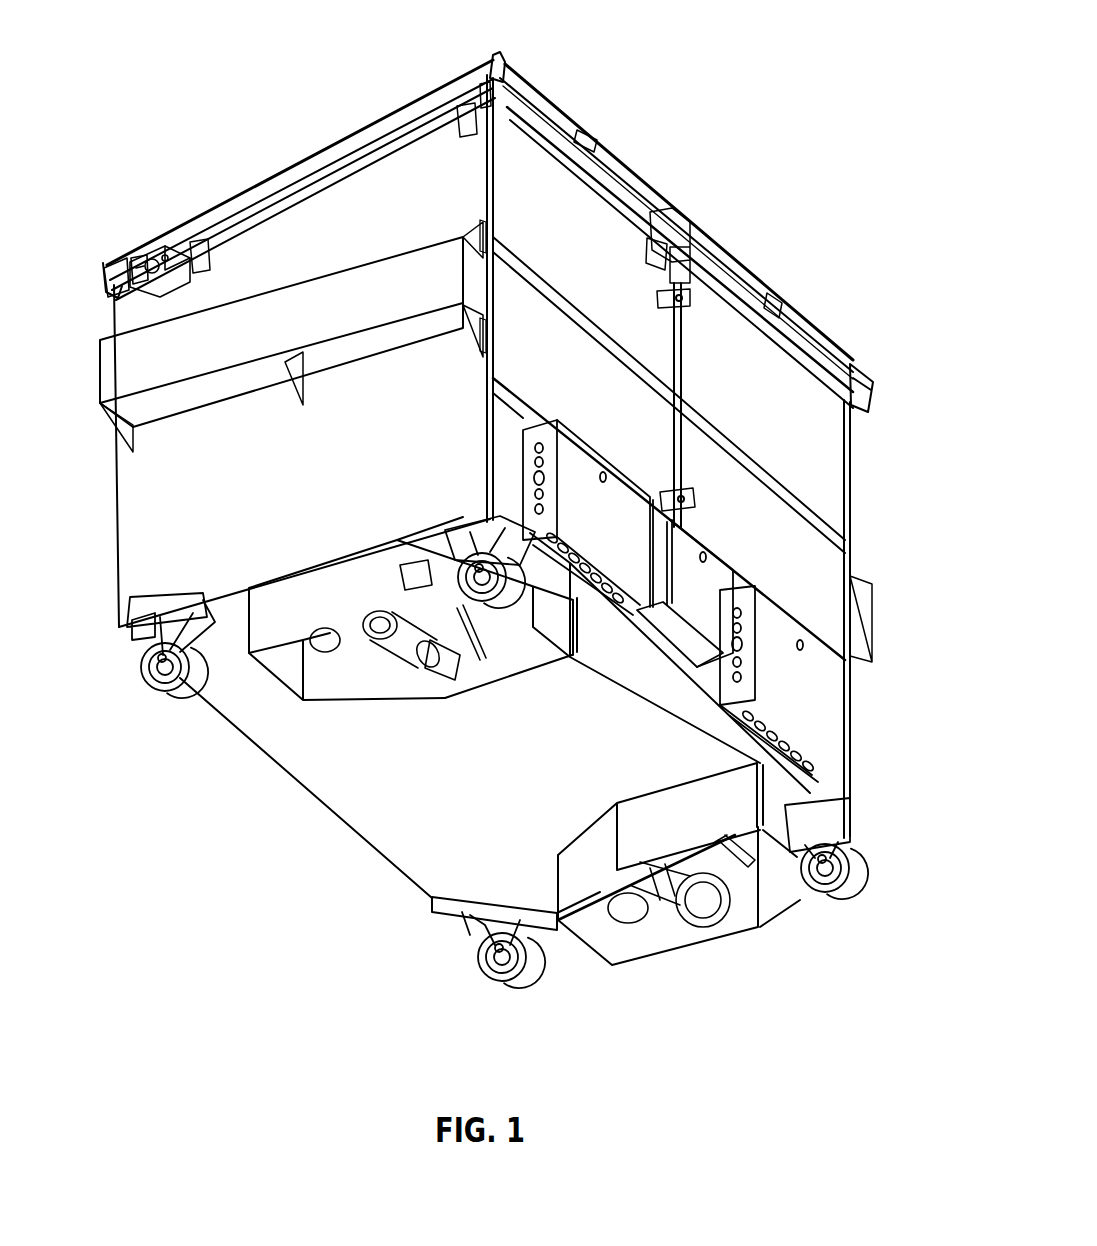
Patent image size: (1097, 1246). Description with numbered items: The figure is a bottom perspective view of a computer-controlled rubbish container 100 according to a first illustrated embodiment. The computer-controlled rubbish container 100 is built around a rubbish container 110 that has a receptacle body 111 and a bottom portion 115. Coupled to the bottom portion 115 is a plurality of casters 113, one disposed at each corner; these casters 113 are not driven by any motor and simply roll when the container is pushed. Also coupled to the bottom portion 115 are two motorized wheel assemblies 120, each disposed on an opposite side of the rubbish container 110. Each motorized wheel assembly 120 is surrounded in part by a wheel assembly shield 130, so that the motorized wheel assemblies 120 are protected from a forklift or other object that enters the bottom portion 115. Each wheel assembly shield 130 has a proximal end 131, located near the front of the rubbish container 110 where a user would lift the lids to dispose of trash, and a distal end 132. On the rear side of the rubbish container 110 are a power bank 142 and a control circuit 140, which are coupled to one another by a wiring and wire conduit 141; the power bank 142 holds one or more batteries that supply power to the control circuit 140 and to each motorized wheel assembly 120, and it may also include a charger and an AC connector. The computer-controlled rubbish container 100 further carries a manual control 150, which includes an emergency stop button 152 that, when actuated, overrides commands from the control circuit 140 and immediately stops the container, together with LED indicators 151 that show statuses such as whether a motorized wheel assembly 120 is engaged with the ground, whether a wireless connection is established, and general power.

The computer-controlled rubbish container 100 is at (734, 52).
The rubbish container 110 is at (553, 122).
The receptacle body 111 is at (133, 517).
The casters 113 is at (162, 693).
The bottom portion 115 is at (358, 813).
The motorized wheel assemblies 120 is at (392, 652).
The wheel assembly shield 130 is at (477, 687).
The proximal end 131 is at (287, 695).
The distal end 132 is at (563, 640).
The control circuit 140 is at (707, 572).
The wiring and wire conduit 141 is at (680, 390).
The power bank 142 is at (573, 457).
The manual control 150 is at (160, 282).
The LED indicators 151 is at (123, 262).
The emergency stop button 152 is at (140, 256).